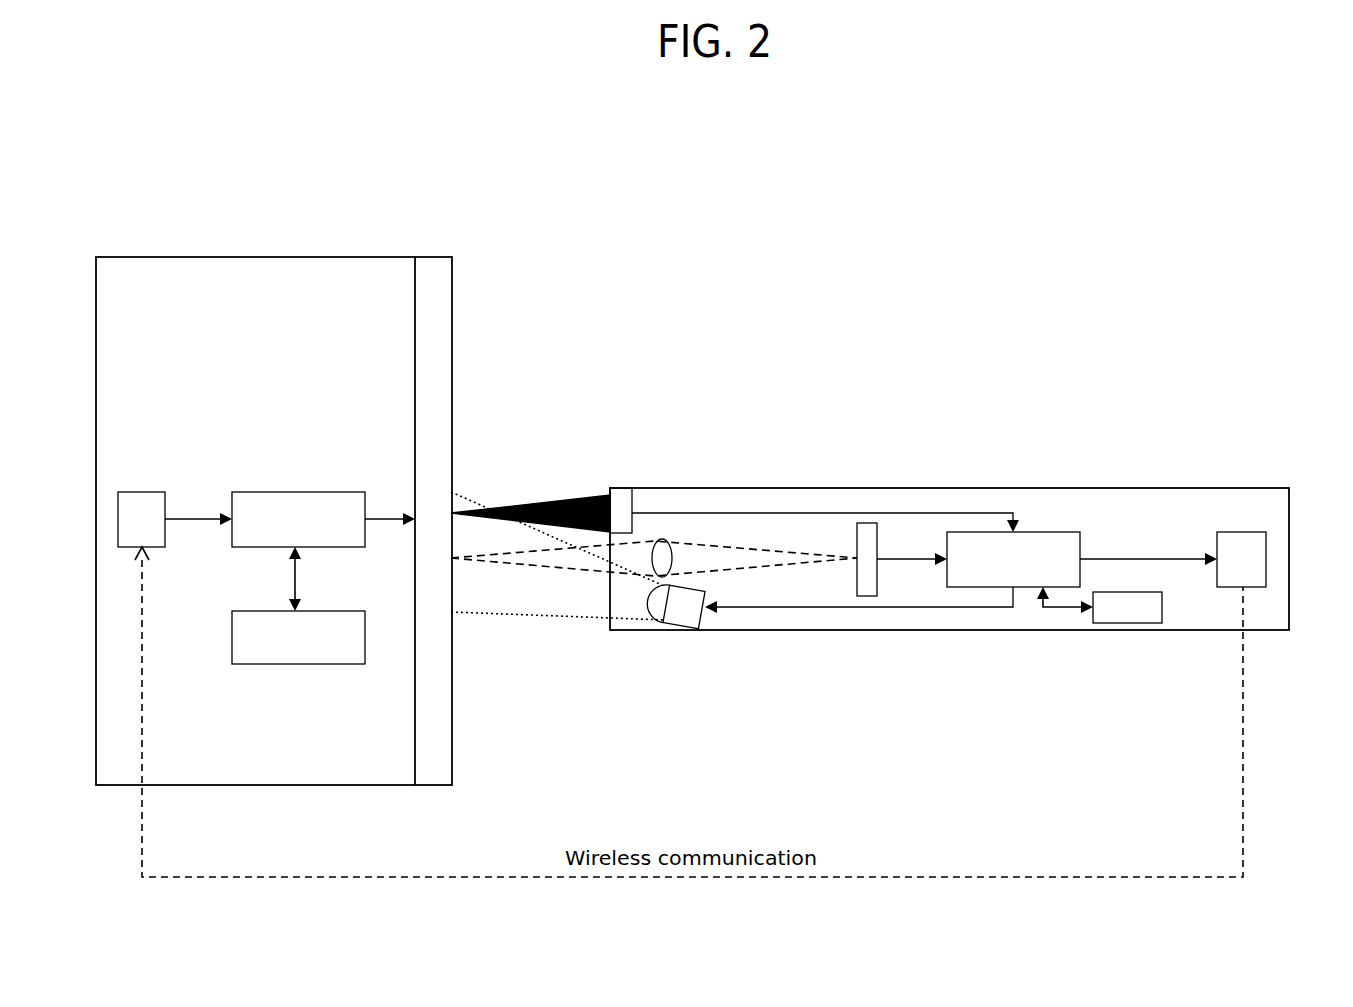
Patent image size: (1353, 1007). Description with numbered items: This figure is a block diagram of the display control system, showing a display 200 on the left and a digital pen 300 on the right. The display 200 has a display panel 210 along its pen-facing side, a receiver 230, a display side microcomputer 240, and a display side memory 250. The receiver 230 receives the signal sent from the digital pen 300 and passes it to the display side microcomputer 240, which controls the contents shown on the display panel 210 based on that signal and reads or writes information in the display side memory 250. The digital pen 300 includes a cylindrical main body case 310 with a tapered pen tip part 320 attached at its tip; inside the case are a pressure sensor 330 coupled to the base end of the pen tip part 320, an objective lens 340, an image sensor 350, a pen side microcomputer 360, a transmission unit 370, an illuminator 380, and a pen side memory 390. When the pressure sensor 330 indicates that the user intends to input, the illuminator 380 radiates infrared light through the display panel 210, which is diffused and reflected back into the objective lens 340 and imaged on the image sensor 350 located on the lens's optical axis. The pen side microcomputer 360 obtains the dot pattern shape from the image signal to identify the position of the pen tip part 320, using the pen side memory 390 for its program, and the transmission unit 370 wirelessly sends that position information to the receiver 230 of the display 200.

The display 200 is at (458, 243).
The display panel 210 is at (440, 715).
The receiver 230 is at (130, 503).
The display side microcomputer 240 is at (257, 513).
The display side memory 250 is at (260, 653).
The digital pen 300 is at (1352, 240).
The main body case 310 is at (907, 630).
The pen tip part 320 is at (535, 505).
The pressure sensor 330 is at (620, 500).
The objective lens 340 is at (668, 548).
The image sensor 350 is at (865, 550).
The pen side microcomputer 360 is at (1053, 552).
The transmission unit 370 is at (1233, 552).
The illuminator 380 is at (687, 608).
The pen side memory 390 is at (1127, 610).